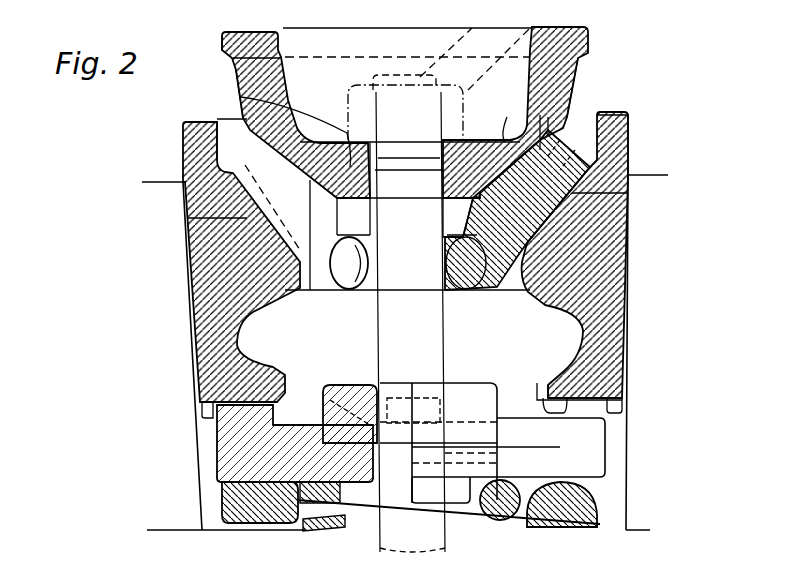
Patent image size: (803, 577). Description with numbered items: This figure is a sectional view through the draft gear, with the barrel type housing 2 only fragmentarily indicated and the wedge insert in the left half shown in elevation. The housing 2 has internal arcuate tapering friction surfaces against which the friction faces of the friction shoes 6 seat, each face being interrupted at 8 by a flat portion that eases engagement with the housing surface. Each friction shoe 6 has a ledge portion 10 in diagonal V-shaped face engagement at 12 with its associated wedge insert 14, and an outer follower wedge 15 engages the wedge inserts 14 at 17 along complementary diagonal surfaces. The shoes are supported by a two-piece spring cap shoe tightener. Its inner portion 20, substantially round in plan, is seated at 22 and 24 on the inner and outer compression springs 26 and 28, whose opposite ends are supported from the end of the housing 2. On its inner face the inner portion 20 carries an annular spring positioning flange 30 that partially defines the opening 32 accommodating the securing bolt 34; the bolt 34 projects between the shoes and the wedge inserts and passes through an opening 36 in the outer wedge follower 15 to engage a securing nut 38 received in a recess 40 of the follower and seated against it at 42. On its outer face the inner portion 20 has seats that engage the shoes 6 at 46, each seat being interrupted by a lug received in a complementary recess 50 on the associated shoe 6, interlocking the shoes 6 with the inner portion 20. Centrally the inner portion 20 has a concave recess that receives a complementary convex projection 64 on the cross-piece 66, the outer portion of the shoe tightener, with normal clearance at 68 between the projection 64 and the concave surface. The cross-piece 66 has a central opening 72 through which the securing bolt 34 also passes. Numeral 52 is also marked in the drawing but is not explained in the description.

The housing 2 is at (646, 174).
The friction shoes 6 is at (215, 310).
The flat portion 8 is at (183, 245).
The ledge portion 10 is at (280, 290).
The diagonal V-shaped face engagement 12 is at (190, 218).
The wedge insert 14 is at (183, 128).
The outer follower wedge 15 is at (580, 30).
The complementary diagonal surfaces 17 is at (240, 100).
The inner portion of spring cap 20 is at (583, 434).
The seat on inner spring 22 is at (512, 517).
The seat on outer spring 24 is at (583, 495).
The inner compression spring 26 is at (307, 517).
The outer compression spring 28 is at (225, 497).
The annular spring positioning flange 30 is at (460, 497).
The opening 32 is at (385, 512).
The securing bolt 34 is at (407, 46).
The opening in outer wedge follower 36 is at (382, 165).
The securing nut 38 is at (446, 71).
The recess 40 is at (283, 62).
The seat of nut 42 is at (237, 77).
The engagement of seats with shoes 46 is at (192, 370).
The recess on shoe 50 is at (210, 410).
The snap ring 52 is at (620, 403).
The convex projection 64 is at (397, 443).
The cross-piece 66 is at (625, 340).
The clearance 68 is at (357, 384).
The opening in cross-piece 72 is at (388, 382).